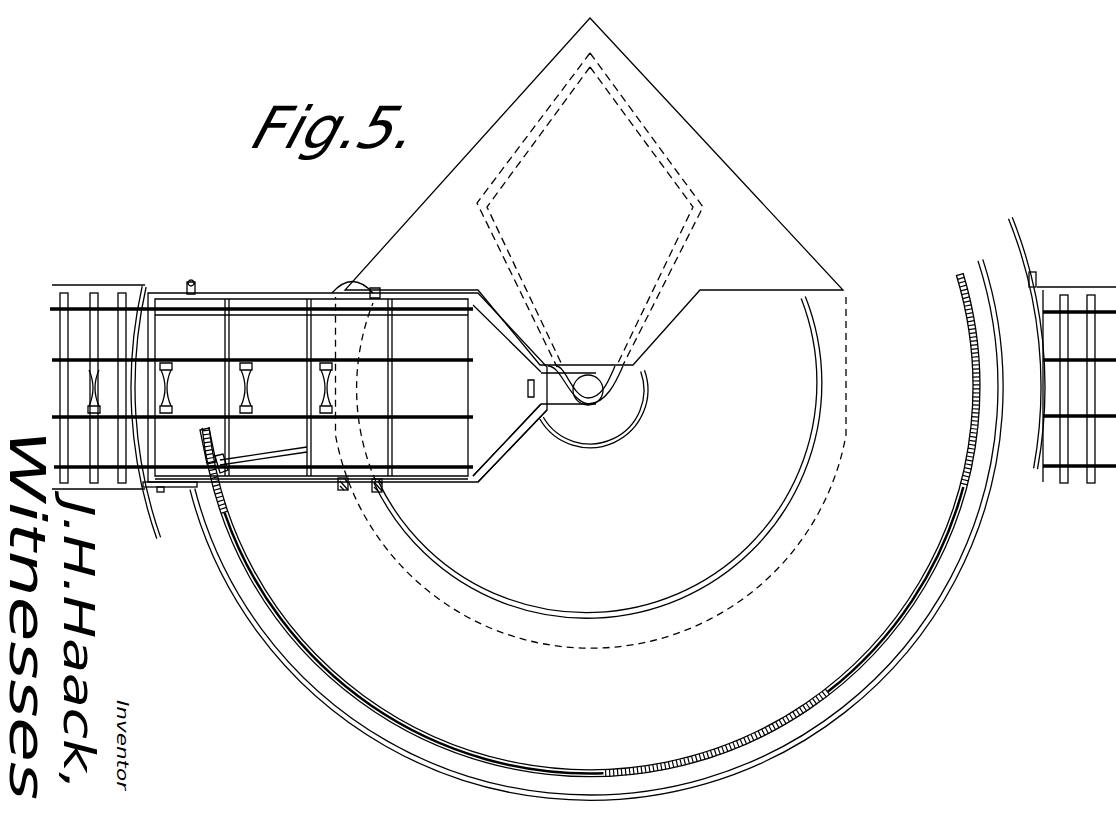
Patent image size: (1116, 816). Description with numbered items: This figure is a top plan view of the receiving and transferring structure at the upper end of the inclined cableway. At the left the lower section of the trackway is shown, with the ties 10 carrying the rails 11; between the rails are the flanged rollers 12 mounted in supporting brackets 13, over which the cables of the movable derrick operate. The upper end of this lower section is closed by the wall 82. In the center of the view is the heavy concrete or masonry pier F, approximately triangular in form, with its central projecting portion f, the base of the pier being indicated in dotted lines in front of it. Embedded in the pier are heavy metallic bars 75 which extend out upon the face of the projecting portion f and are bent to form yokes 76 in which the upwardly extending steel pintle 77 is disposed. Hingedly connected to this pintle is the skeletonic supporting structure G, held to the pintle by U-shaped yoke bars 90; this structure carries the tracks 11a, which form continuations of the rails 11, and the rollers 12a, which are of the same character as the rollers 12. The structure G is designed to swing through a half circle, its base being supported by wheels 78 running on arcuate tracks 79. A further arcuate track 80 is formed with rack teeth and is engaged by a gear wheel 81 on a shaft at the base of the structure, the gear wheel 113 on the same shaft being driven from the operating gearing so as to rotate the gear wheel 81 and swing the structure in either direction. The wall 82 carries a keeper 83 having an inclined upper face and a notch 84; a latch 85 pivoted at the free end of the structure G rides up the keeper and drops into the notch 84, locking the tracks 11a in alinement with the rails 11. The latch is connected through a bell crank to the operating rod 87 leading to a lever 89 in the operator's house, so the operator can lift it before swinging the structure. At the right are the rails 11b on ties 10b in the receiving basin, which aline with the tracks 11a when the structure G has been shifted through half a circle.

The ties 10 is at (62, 324).
The rails 11 is at (56, 358).
The flanged rollers 12 is at (89, 384).
The supporting brackets 13 is at (92, 408).
The tracks 11a is at (271, 308).
The rollers 12a is at (174, 372).
The wheels 78 is at (188, 286).
The gear wheel 81 is at (202, 449).
The wall 82 is at (138, 490).
The keeper 83 is at (154, 526).
The notch 84 is at (1037, 276).
The latch 85 is at (178, 490).
The operating rod 87 is at (263, 482).
The lever 89 is at (383, 488).
The gear wheel 113 is at (226, 460).
The metallic bars 75 is at (663, 152).
The yokes 76 is at (593, 403).
The pintle 77 is at (600, 390).
The arcuate tracks 79 is at (630, 432).
The arcuate track 80 is at (312, 658).
The U-shaped yoke bars 90 is at (562, 412).
The rails 11b is at (1060, 465).
The ties 10b is at (1076, 395).
The pier F is at (768, 224).
The skeletonic supporting structure G is at (303, 495).
The central projecting portion f is at (640, 365).